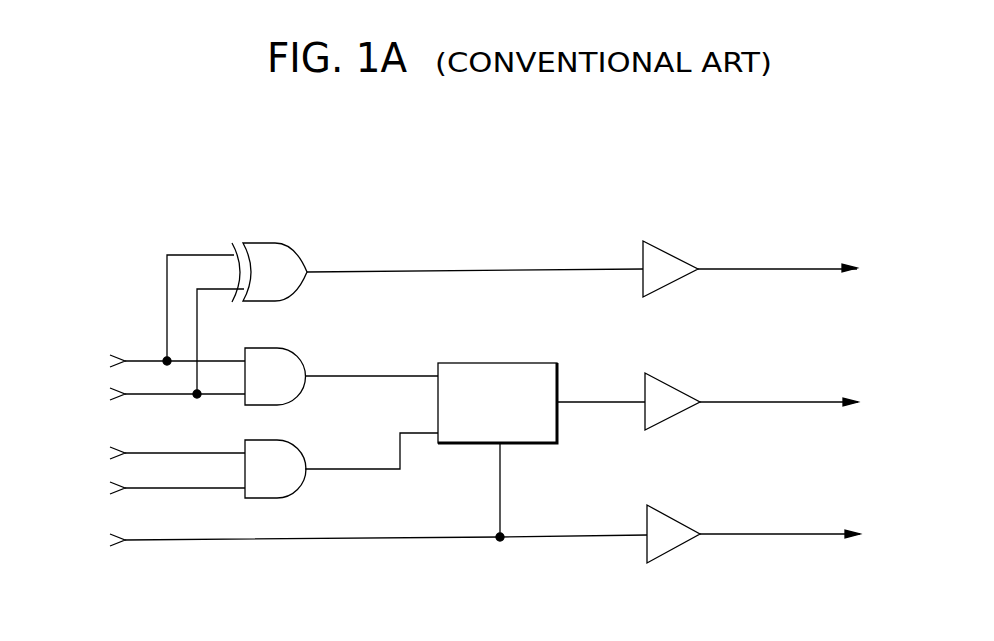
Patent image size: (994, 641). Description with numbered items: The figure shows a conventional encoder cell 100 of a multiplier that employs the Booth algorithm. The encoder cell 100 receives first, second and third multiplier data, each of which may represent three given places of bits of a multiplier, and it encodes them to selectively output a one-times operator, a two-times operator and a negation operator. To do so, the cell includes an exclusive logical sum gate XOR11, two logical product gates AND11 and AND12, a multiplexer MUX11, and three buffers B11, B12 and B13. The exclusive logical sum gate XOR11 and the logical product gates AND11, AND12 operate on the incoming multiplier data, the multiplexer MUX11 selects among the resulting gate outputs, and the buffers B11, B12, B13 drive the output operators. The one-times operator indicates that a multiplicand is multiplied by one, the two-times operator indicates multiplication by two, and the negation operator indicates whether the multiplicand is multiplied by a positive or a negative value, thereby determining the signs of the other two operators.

The encoder cell 100 is at (802, 192).
The exclusive logical sum gate XOR11 is at (278, 242).
The logical product gate AND11 is at (277, 347).
The logical product gate AND12 is at (277, 439).
The multiplexer MUX11 is at (502, 363).
The buffer B11 is at (672, 253).
The buffer B12 is at (673, 387).
The buffer B13 is at (680, 518).